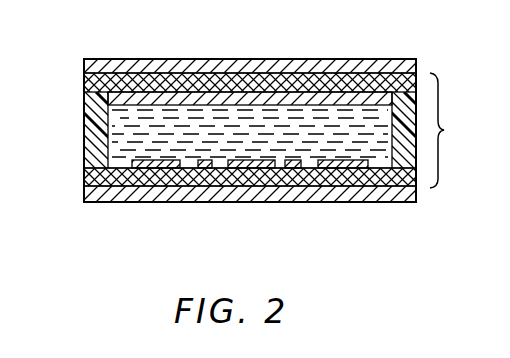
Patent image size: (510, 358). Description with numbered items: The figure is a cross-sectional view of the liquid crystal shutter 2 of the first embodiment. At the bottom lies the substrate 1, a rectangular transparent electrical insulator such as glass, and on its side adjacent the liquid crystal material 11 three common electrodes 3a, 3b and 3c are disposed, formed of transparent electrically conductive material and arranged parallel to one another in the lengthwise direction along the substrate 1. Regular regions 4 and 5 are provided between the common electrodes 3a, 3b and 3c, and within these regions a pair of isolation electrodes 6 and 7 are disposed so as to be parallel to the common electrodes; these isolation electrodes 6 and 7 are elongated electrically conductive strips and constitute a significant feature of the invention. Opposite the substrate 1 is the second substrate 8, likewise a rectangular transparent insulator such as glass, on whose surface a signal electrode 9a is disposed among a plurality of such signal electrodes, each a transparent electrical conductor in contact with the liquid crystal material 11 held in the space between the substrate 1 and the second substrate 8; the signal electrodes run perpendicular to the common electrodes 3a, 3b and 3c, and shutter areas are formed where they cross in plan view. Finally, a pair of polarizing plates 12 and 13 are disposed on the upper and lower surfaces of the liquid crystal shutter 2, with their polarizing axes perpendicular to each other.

The substrate 1 is at (102, 190).
The liquid crystal shutter 2 is at (444, 130).
The common electrode 3a is at (152, 170).
The common electrode 3b is at (253, 170).
The common electrode 3c is at (350, 170).
The regular region 4 is at (222, 162).
The regular region 5 is at (313, 162).
The isolation electrode 6 is at (205, 170).
The isolation electrode 7 is at (296, 170).
The second substrate 8 is at (85, 80).
The signal electrode 9a is at (375, 95).
The liquid crystal material 11 is at (110, 130).
The polarizing plate 12 is at (276, 65).
The polarizing plate 13 is at (393, 190).